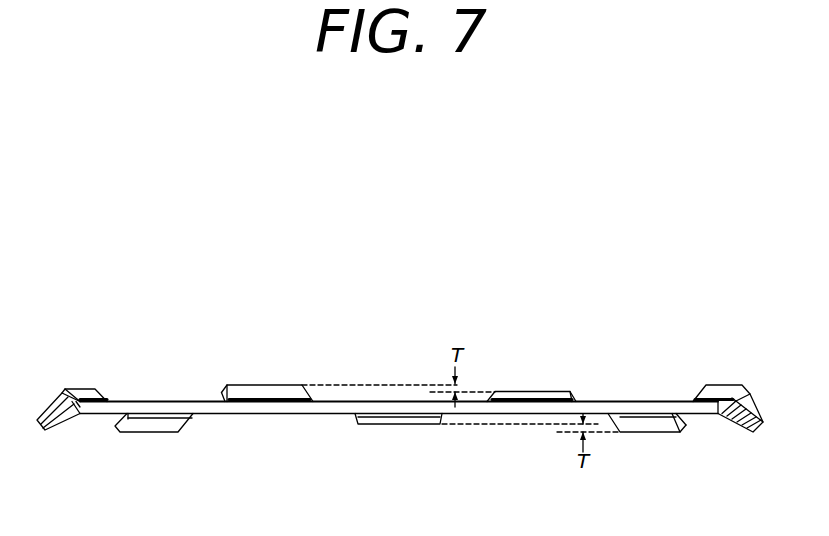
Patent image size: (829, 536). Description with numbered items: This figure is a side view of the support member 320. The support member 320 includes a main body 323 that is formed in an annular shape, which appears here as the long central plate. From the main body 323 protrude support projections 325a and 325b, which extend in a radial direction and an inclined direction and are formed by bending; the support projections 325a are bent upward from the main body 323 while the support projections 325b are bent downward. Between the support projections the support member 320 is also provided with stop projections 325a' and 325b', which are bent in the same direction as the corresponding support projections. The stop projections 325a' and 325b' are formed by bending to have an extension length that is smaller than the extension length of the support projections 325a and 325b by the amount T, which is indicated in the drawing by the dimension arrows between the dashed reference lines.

The support member 320 is at (115, 238).
The main body 323 is at (288, 408).
The support projection 325a is at (489, 364).
The stop projection 325a' is at (534, 365).
The support projection 325b is at (400, 456).
The stop projection 325b' is at (394, 453).